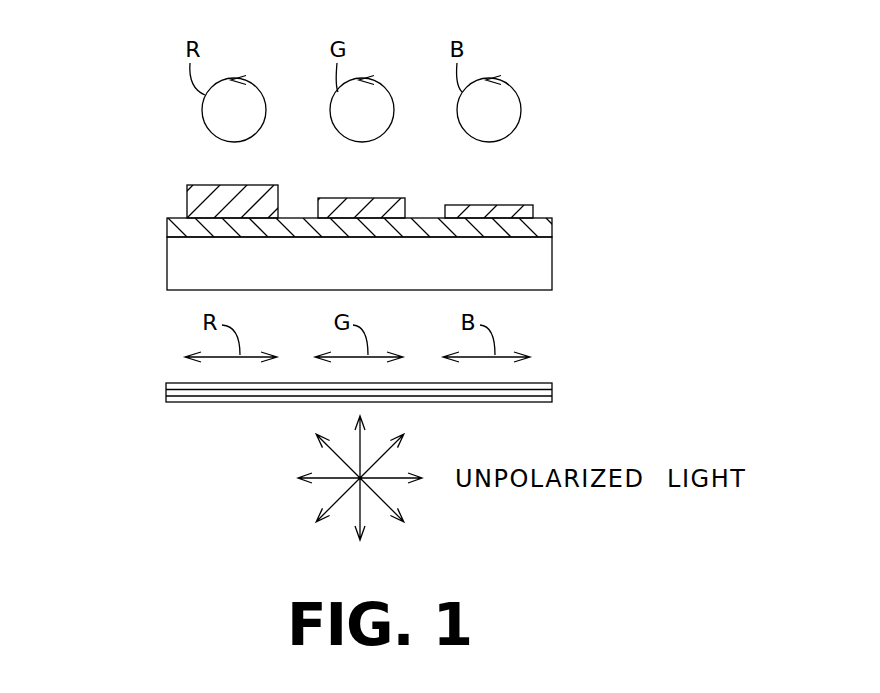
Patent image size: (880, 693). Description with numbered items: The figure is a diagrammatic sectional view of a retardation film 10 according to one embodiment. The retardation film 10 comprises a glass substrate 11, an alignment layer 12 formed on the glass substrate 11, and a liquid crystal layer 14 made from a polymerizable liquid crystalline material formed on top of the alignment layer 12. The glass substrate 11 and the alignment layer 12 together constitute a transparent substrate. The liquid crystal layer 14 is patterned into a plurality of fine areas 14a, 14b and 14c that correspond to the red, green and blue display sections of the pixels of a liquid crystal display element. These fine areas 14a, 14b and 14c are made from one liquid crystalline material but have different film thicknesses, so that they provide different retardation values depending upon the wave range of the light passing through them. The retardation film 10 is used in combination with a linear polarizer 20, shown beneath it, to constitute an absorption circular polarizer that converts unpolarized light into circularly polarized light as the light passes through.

The retardation film 10 is at (163, 185).
The glass substrate 11 is at (540, 278).
The alignment layer 12 is at (538, 230).
The liquid crystal layer 14 is at (448, 162).
The fine area 14a is at (240, 184).
The fine area 14b is at (383, 198).
The fine area 14c is at (508, 205).
The linear polarizer 20 is at (548, 383).